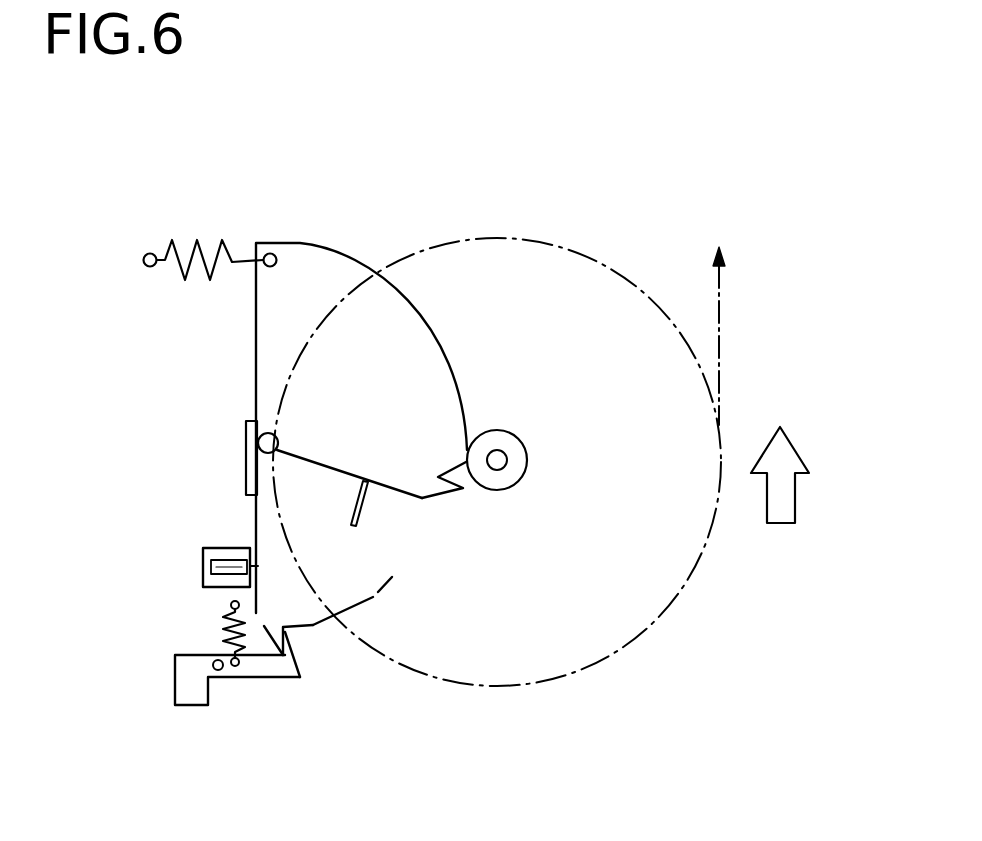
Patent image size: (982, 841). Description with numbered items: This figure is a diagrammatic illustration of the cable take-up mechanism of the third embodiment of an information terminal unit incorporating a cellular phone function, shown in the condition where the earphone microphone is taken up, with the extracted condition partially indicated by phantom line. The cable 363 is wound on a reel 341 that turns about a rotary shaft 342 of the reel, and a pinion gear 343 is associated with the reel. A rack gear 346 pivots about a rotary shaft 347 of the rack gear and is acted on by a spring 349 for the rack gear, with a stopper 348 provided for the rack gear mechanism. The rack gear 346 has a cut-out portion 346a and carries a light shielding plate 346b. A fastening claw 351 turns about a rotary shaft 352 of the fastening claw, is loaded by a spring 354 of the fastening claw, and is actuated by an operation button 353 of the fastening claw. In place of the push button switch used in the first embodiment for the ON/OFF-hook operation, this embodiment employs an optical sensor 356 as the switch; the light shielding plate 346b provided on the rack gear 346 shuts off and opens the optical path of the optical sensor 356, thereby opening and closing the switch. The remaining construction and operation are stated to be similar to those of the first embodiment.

The reel 341 is at (700, 572).
The rotary shaft of the reel 342 is at (513, 440).
The pinion gear 343 is at (490, 433).
The rack gear 346 is at (332, 256).
The cut-out portion 346a is at (466, 490).
The light shielding plate 346b is at (353, 525).
The rotary shaft of the rack gear 347 is at (261, 428).
The stopper 348 is at (246, 470).
The spring for the rack gear 349 is at (190, 240).
The fastening claw 351 is at (283, 672).
The rotary shaft of the fastening claw 352 is at (220, 671).
The operation button of the fastening claw 353 is at (175, 688).
The spring of the fastening claw 354 is at (225, 632).
The optical sensor 356 is at (210, 548).
The cable 363 is at (719, 360).